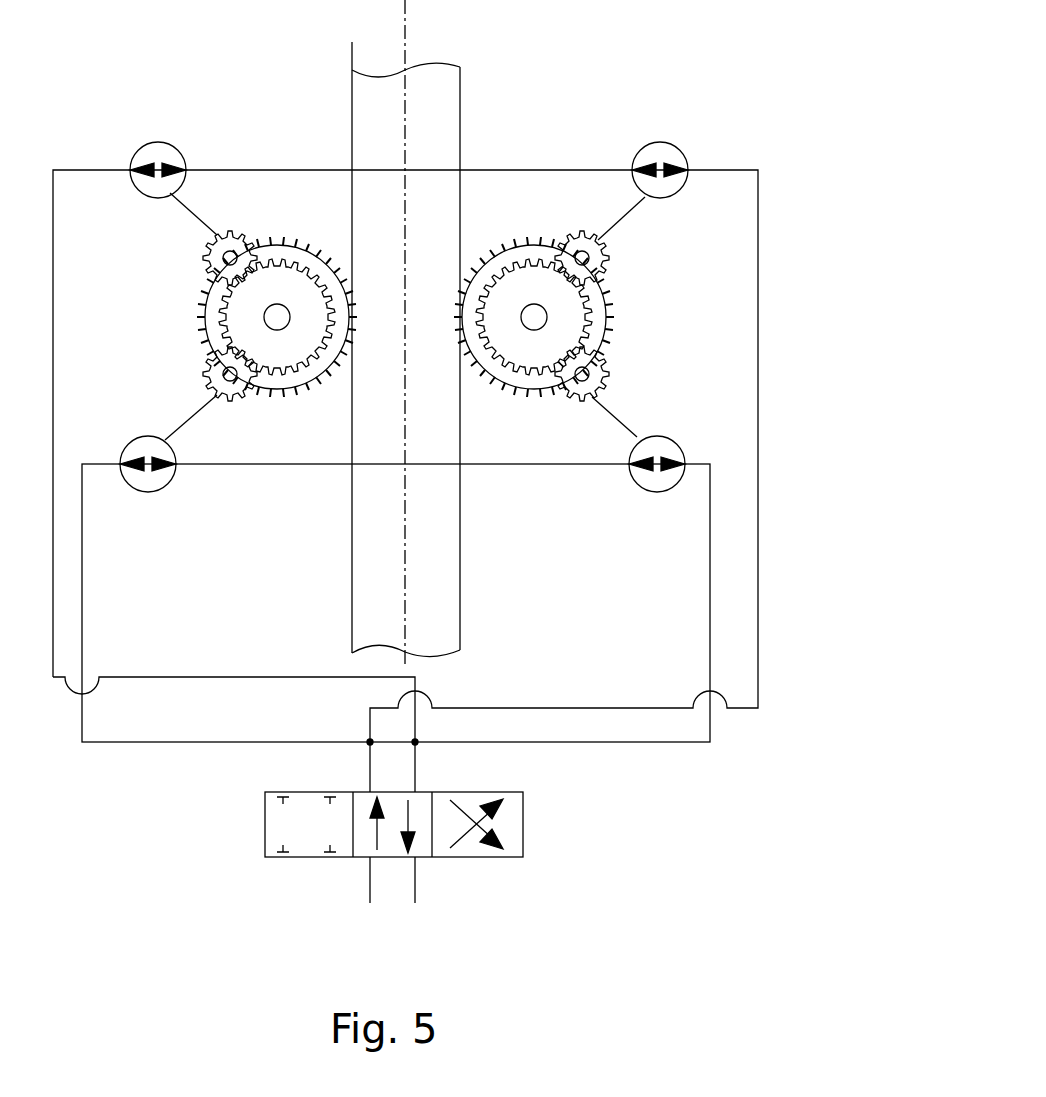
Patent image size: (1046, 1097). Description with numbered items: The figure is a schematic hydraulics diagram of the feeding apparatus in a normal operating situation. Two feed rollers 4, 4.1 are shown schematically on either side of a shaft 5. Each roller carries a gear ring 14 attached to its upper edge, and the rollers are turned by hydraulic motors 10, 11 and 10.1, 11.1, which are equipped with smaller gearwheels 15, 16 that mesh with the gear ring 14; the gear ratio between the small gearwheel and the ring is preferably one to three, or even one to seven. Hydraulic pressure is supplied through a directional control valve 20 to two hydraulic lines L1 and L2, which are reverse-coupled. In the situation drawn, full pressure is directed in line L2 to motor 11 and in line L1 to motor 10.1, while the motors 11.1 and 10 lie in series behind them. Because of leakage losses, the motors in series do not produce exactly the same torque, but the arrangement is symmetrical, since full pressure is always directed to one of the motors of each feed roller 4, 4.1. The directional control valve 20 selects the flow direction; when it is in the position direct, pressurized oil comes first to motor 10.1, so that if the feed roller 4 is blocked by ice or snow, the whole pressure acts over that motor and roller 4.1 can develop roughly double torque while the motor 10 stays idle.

The feed roller 4 is at (570, 289).
The feed roller 4.1 is at (205, 295).
The shaft 5 is at (447, 120).
The hydraulic motor 10 is at (672, 452).
The hydraulic motor 10.1 is at (142, 452).
The hydraulic motor 11 is at (663, 158).
The hydraulic motor 11.1 is at (163, 157).
The gear ring 14 is at (560, 303).
The gearwheel 15 is at (605, 378).
The gearwheel 16 is at (575, 248).
The directional control valve 20 is at (512, 832).
The hydraulic line L1 is at (710, 625).
The hydraulic line L2 is at (758, 588).